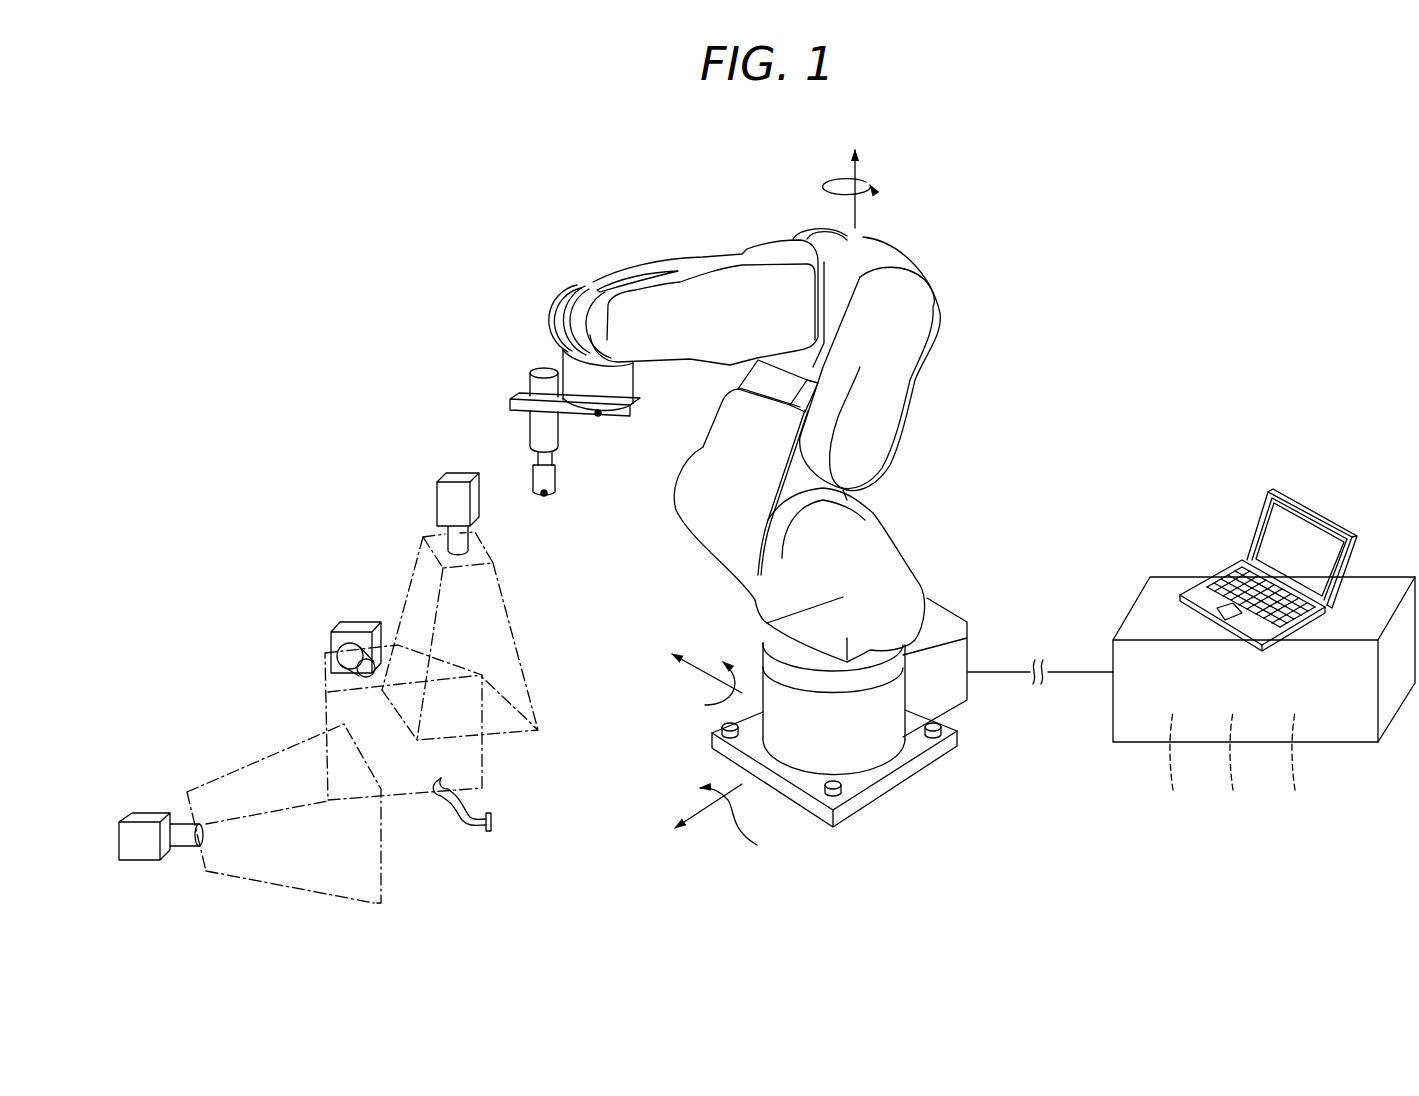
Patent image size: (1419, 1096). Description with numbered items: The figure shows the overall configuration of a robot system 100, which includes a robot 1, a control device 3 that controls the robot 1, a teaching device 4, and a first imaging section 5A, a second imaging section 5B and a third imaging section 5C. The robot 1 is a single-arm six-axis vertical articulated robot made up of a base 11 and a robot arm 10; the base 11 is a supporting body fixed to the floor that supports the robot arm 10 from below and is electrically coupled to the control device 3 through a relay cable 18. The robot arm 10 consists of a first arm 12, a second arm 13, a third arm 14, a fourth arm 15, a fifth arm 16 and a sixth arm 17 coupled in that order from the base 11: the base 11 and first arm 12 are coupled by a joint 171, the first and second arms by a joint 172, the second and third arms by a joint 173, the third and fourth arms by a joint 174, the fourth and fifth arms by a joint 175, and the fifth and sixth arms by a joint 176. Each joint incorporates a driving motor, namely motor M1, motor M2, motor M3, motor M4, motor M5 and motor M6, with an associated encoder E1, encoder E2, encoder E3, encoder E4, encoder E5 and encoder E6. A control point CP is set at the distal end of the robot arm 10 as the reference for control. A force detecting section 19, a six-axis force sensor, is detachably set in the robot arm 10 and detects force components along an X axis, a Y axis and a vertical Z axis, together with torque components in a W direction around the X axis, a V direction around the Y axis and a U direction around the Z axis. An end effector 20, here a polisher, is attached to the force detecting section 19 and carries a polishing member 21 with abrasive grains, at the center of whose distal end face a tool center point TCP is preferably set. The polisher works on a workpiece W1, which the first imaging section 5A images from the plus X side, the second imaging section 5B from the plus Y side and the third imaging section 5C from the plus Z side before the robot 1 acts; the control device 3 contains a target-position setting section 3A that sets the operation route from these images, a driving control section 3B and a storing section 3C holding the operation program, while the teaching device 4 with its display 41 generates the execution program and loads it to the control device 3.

The robot system 100 is at (1318, 213).
The robot 1 is at (1005, 218).
The robot arm 10 is at (938, 283).
The base 11 is at (833, 750).
The first arm 12 is at (912, 596).
The second arm 13 is at (890, 428).
The third arm 14 is at (862, 240).
The fourth arm 15 is at (737, 283).
The fifth arm 16 is at (582, 298).
The sixth arm 17 is at (578, 362).
The joint 171 is at (787, 632).
The joint 172 is at (680, 497).
The joint 173 is at (895, 250).
The joint 174 is at (795, 232).
The joint 175 is at (597, 275).
The joint 176 is at (625, 372).
The relay cable 18 is at (1075, 682).
The force detecting section 19 is at (622, 387).
The end effector 20 is at (538, 430).
The polishing member 21 is at (548, 480).
The control device 3 is at (1264, 658).
The target-position setting section 3A is at (1171, 762).
The driving control section 3B is at (1233, 762).
The storing section 3C is at (1293, 762).
The teaching device 4 is at (1268, 545).
The display 41 is at (1280, 540).
The first imaging section 5A is at (340, 628).
The second imaging section 5B is at (143, 820).
The third imaging section 5C is at (455, 503).
The motor M1 is at (952, 765).
The encoder E1 is at (873, 717).
The motor M2 is at (938, 553).
The encoder E2 is at (862, 573).
The motor M3 is at (934, 464).
The encoder E3 is at (853, 463).
The motor M4 is at (939, 327).
The encoder E4 is at (843, 290).
The motor M5 is at (694, 237).
The encoder E5 is at (720, 310).
The motor M6 is at (489, 304).
The encoder E6 is at (545, 297).
The control point CP is at (598, 413).
The tool center point TCP is at (544, 493).
The workpiece W1 is at (470, 830).
The X axis X is at (698, 663).
The Y axis Y is at (698, 812).
The Z axis Z is at (855, 173).
The U direction U is at (868, 183).
The V direction V is at (736, 823).
The W direction W is at (705, 705).